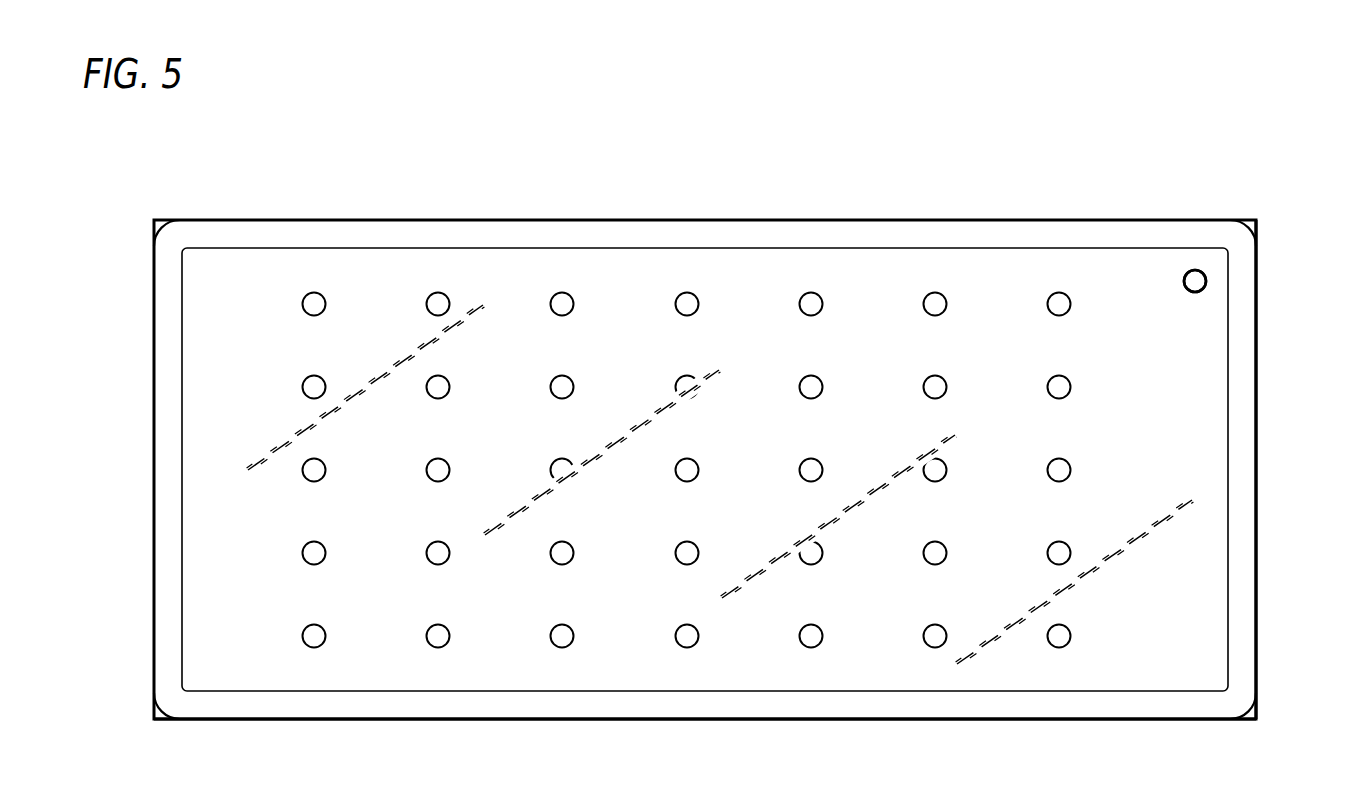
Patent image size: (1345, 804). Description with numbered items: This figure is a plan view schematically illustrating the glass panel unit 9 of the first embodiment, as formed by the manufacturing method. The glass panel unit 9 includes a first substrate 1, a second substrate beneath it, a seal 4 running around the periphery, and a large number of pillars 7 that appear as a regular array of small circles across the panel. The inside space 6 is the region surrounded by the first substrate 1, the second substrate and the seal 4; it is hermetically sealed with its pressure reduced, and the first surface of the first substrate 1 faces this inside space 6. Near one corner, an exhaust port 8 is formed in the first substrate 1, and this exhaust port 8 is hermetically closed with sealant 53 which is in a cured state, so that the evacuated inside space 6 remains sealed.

The first substrate 1 is at (868, 298).
The seal 4 is at (777, 708).
The inside space 6 is at (999, 298).
The pillars 7 is at (436, 634).
The exhaust port 8 is at (1184, 280).
The glass panel unit 9 is at (1258, 313).
The sealant 53 is at (1195, 290).